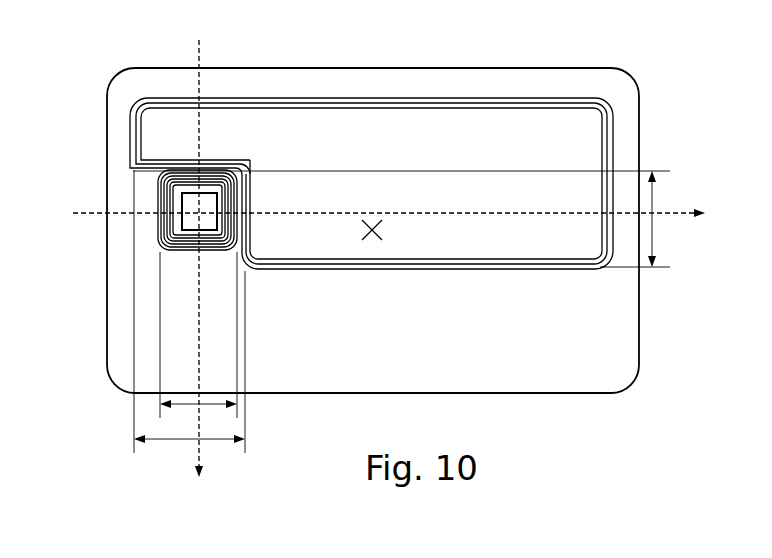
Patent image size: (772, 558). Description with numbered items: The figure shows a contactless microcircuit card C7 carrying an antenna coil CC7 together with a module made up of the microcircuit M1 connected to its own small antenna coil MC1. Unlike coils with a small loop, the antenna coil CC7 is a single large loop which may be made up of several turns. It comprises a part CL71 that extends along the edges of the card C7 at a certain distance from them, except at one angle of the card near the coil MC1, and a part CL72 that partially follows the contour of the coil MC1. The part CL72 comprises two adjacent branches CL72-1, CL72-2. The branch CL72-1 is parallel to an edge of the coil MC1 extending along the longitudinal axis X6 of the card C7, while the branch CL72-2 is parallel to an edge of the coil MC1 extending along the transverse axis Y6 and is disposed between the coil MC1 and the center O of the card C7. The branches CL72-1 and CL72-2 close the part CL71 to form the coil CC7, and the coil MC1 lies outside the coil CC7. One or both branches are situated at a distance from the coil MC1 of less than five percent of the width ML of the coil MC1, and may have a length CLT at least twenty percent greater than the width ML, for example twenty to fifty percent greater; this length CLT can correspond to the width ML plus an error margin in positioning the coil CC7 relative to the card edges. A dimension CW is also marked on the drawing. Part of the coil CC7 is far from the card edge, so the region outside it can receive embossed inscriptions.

The contactless microcircuit card C7 is at (108, 105).
The antenna coil CC7 is at (398, 151).
The part of the antenna coil following the card edge CL71 is at (356, 151).
The part of the antenna coil following the contour of the module coil CL72 is at (237, 150).
The first branch CL72-1 is at (173, 167).
The second branch CL72-2 is at (247, 210).
The microcircuit M1 is at (172, 140).
The module antenna coil MC1 is at (172, 139).
The longitudinal axis X6 is at (405, 215).
The transverse axis Y6 is at (195, 272).
The center of the card O is at (372, 241).
The coil width CW is at (411, 219).
The width of the module coil ML is at (198, 342).
The length of the branch CLT is at (189, 319).